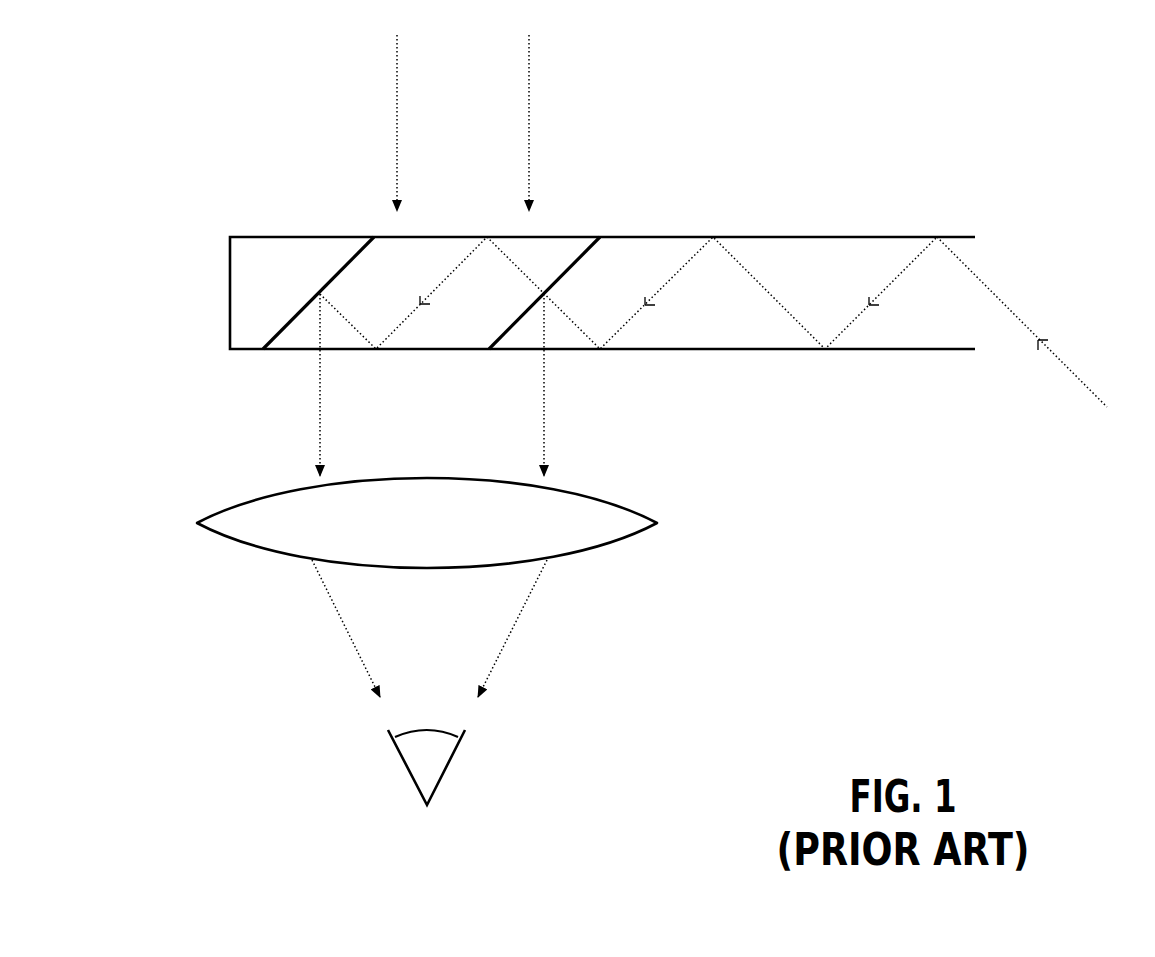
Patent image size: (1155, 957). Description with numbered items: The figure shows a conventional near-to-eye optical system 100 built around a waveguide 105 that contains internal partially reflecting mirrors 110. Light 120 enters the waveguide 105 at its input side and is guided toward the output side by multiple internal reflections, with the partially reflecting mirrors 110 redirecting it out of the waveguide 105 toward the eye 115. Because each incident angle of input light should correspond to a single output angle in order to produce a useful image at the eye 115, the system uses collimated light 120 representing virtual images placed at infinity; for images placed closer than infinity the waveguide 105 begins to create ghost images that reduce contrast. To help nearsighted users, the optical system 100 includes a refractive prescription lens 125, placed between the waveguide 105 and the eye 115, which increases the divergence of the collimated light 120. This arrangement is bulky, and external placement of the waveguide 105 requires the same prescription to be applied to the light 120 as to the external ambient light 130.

The near-to-eye optical system 100 is at (140, 108).
The waveguide 105 is at (800, 237).
The partially reflecting mirrors 110 is at (340, 237).
The eye 115 is at (413, 759).
The light 120 is at (1053, 353).
The refractive prescription lens 125 is at (412, 532).
The external ambient light 130 is at (397, 110).